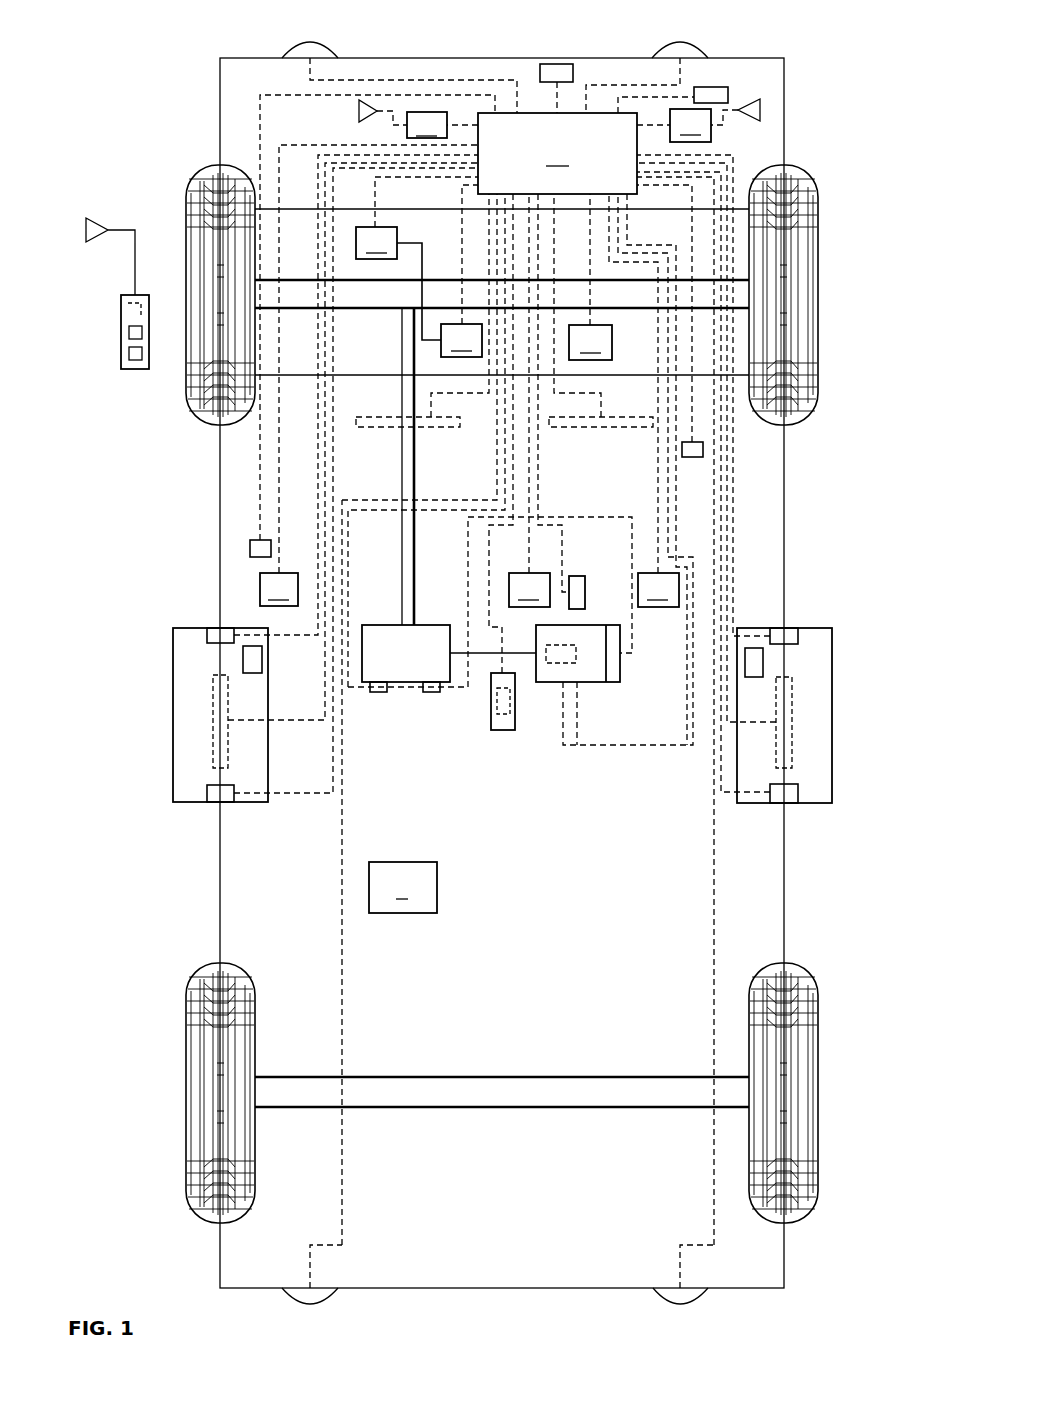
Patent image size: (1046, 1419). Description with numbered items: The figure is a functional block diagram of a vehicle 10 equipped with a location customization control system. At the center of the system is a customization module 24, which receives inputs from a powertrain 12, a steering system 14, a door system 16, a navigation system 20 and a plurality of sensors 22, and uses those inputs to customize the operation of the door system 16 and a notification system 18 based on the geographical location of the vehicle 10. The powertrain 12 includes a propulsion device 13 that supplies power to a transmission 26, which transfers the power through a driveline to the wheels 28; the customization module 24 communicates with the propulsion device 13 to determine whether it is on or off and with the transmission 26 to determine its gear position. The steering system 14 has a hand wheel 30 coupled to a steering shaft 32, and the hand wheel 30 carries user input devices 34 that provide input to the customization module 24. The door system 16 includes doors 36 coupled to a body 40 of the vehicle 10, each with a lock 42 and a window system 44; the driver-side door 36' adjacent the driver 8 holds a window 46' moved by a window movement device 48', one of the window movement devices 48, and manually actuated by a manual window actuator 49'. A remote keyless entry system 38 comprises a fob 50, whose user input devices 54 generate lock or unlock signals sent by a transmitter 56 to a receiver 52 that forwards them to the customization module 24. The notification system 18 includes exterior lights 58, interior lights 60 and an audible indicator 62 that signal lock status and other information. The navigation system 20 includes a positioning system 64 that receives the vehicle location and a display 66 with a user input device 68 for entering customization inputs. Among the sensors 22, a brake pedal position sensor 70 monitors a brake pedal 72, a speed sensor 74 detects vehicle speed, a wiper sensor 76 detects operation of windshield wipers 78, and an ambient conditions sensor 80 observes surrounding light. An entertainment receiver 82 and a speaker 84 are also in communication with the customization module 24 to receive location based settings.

The driver 8 is at (403, 887).
The vehicle 10 is at (166, 32).
The powertrain 12 is at (742, 385).
The propulsion device 13 is at (417, 258).
The steering system 14 is at (405, 722).
The door system 16 is at (123, 518).
The notification system 18 is at (232, 440).
The navigation system 20 is at (590, 712).
The sensors 22 is at (770, 340).
The customization module 24 is at (557, 153).
The transmission 26 is at (461, 271).
The wheels 28 is at (508, 694).
The hand wheel 30 is at (422, 622).
The steering shaft 32 is at (402, 352).
The user input devices 34 is at (378, 692).
The doors 36 is at (771, 700).
The door 36' is at (439, 700).
The remote keyless entry system 38 is at (405, 70).
The body 40 is at (784, 930).
The lock 42 is at (225, 803).
The window system 44 is at (500, 700).
The window 46' is at (180, 721).
The window movement device 48 is at (833, 615).
The window movement device 48' is at (201, 618).
The manual window actuator 49' is at (275, 675).
The fob 50 is at (92, 214).
The receiver 52 is at (403, 119).
The user input devices 54 is at (129, 354).
The transmitter 56 is at (120, 305).
The exterior lights 58 is at (302, 45).
The interior lights 60 is at (469, 376).
The audible indicator 62 is at (728, 93).
The positioning system 64 is at (715, 120).
The display 66 is at (552, 688).
The user input device 68 is at (614, 682).
The brake pedal position sensor 70 is at (515, 708).
The brake pedal 72 is at (503, 732).
The speed sensor 74 is at (557, 64).
The wiper sensor 76 is at (590, 277).
The windshield wipers 78 is at (440, 427).
The ambient conditions sensor 80 is at (577, 576).
The receiver 82 is at (576, 648).
The speaker 84 is at (250, 548).